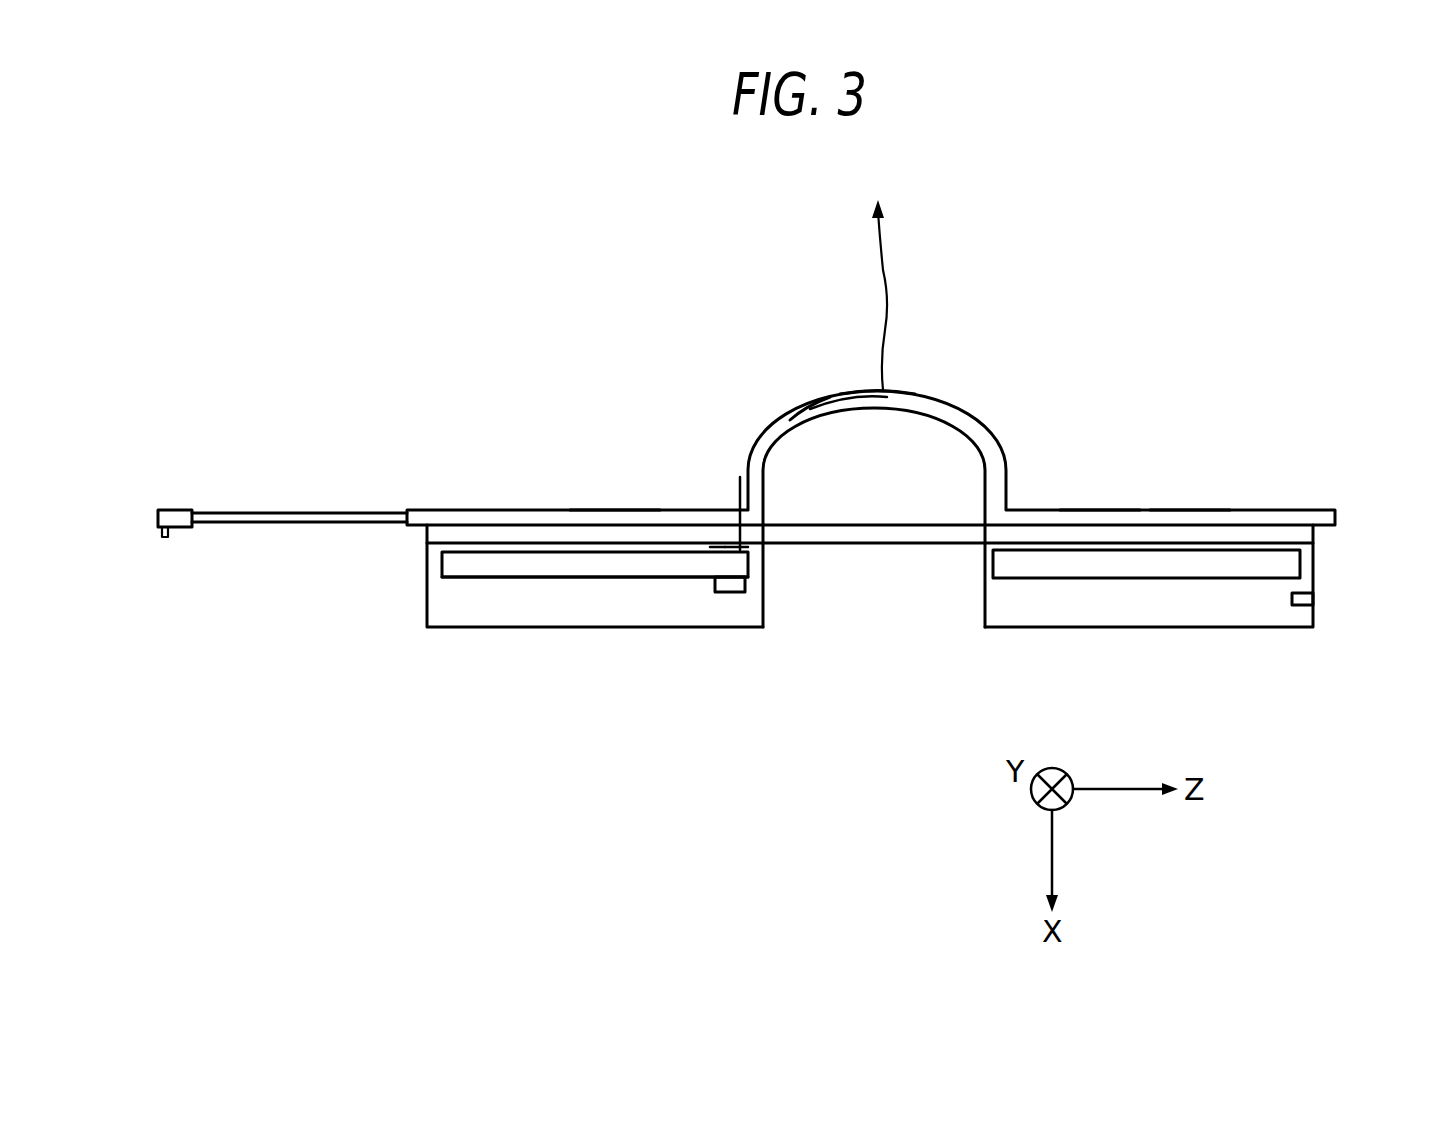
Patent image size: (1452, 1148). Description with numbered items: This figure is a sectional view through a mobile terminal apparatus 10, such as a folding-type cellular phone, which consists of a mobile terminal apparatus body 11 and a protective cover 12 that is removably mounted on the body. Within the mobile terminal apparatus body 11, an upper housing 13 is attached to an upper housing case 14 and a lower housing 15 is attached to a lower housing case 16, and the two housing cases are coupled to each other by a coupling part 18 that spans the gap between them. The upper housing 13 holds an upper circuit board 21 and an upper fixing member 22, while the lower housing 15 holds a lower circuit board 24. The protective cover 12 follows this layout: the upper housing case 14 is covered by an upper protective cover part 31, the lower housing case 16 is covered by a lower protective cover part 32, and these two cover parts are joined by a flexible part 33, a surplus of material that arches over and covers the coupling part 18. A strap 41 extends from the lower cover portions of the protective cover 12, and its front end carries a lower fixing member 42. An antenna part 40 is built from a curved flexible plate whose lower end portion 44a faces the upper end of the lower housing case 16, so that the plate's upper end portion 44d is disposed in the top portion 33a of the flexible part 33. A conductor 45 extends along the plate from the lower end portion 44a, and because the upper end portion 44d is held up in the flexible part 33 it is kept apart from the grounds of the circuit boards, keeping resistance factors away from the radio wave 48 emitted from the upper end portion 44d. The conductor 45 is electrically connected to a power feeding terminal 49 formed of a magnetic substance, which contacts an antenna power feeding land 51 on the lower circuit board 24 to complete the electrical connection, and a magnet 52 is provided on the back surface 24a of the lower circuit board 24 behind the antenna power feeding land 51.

The mobile terminal apparatus 10 is at (1198, 310).
The mobile terminal apparatus body 11 is at (1311, 569).
The protective cover 12 is at (1097, 509).
The upper housing 13 is at (1262, 607).
The upper housing case 14 is at (1228, 535).
The lower housing 15 is at (463, 605).
The lower housing case 16 is at (550, 528).
The coupling part 18 is at (880, 540).
The upper circuit board 21 is at (1187, 565).
The upper fixing member 22 is at (1309, 600).
The lower circuit board 24 is at (548, 567).
The back surface of lower circuit board 24a is at (643, 577).
The upper protective cover part 31 is at (1185, 508).
The lower protective cover part 32 is at (615, 508).
The flexible part 33 is at (957, 410).
The top portion of flexible part 33a is at (890, 393).
The antenna part 40 is at (826, 400).
The strap 41 is at (330, 513).
The lower fixing member 42 is at (175, 513).
The lower end portion of plate 44a is at (740, 477).
The upper end portion of plate 44d is at (872, 393).
The conductor 45 is at (763, 508).
The radio wave 48 is at (885, 258).
The power feeding terminal 49 is at (735, 545).
The antenna power feeding land 51 is at (718, 543).
The magnet 52 is at (727, 592).